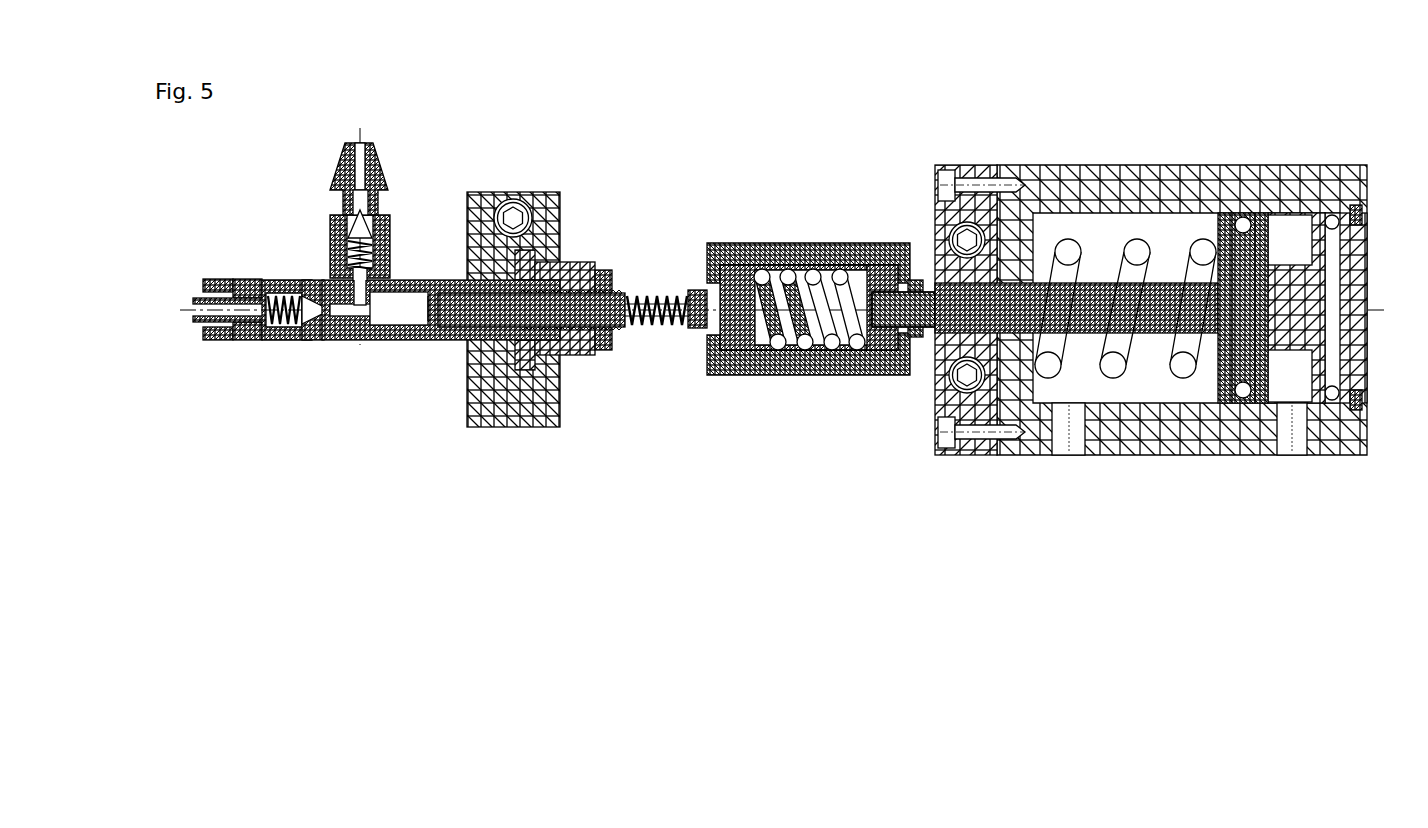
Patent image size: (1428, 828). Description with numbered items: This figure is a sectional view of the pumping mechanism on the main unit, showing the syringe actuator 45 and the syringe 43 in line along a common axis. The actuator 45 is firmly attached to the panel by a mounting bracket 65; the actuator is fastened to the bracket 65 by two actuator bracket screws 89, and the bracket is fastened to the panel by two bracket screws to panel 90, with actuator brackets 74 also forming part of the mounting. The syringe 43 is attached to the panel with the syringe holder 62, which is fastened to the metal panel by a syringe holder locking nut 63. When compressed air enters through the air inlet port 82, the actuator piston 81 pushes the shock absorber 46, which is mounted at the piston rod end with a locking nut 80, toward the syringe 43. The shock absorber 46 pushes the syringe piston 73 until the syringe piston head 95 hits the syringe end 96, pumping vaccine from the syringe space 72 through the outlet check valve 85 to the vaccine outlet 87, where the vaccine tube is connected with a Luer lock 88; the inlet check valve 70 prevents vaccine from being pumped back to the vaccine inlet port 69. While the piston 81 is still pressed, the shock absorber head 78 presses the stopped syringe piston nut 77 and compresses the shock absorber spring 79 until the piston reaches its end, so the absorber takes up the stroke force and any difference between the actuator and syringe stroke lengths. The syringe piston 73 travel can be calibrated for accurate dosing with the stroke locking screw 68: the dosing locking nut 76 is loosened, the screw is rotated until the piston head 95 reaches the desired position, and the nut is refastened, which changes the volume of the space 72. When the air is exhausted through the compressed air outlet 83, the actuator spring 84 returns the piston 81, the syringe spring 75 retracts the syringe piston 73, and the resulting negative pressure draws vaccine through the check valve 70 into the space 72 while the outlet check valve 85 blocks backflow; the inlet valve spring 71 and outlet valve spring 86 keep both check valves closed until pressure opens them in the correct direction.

The syringe 43 is at (347, 341).
The syringe actuator 45 is at (1105, 165).
The shock absorber 46 is at (757, 243).
The syringe holder 62 is at (543, 217).
The syringe holder locking nut 63 is at (518, 199).
The syringe actuator bracket 65 is at (945, 380).
The stroke locking screw 68 is at (621, 290).
The vaccine inlet port 69 is at (367, 158).
The inlet check valve 70 is at (340, 217).
The inlet valve spring 71 is at (331, 240).
The syringe space 72 is at (383, 318).
The syringe piston 73 is at (495, 322).
The actuator brackets 74 is at (575, 355).
The syringe spring 75 is at (662, 330).
The dosing locking nut 76 is at (607, 350).
The syringe piston nut 77 is at (693, 290).
The shock absorber head 78 is at (740, 350).
The shock absorber spring 79 is at (817, 348).
The locking nut 80 is at (917, 290).
The actuator piston 81 is at (1259, 217).
The air inlet port 82 is at (1285, 442).
The compressed air outlet 83 is at (1080, 447).
The actuator spring 84 is at (1139, 250).
The outlet check valve 85 is at (312, 340).
The outlet valve spring 86 is at (285, 340).
The vaccine outlet 87 is at (203, 311).
The Luer lock 88 is at (230, 340).
The actuator bracket screws 89 is at (1024, 412).
The bracket screws to panel 90 is at (940, 380).
The syringe piston head 95 is at (427, 313).
The syringe end 96 is at (374, 298).